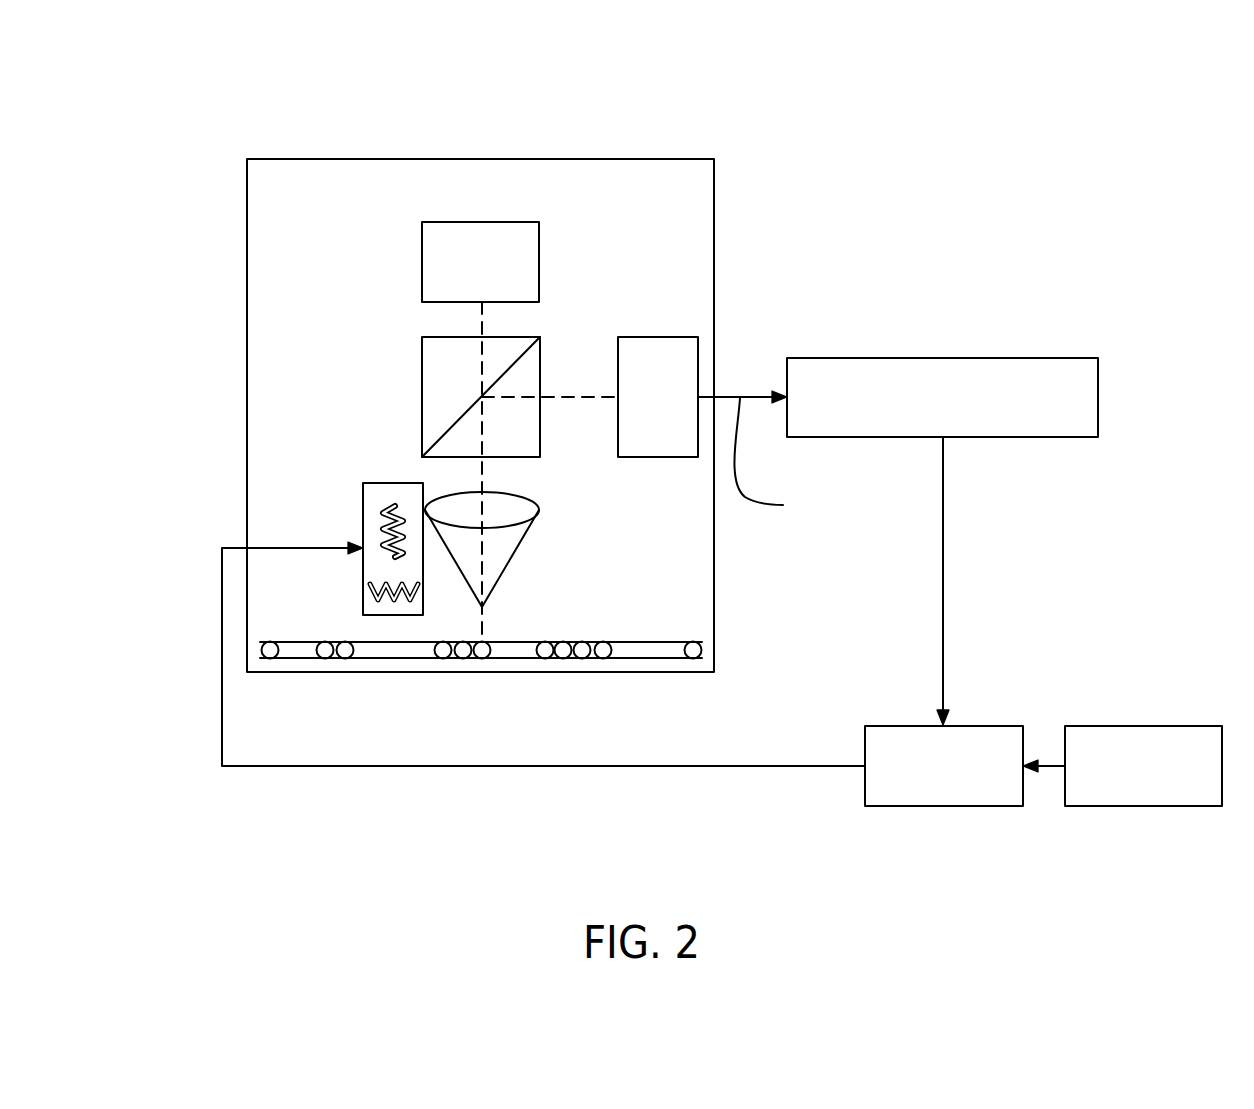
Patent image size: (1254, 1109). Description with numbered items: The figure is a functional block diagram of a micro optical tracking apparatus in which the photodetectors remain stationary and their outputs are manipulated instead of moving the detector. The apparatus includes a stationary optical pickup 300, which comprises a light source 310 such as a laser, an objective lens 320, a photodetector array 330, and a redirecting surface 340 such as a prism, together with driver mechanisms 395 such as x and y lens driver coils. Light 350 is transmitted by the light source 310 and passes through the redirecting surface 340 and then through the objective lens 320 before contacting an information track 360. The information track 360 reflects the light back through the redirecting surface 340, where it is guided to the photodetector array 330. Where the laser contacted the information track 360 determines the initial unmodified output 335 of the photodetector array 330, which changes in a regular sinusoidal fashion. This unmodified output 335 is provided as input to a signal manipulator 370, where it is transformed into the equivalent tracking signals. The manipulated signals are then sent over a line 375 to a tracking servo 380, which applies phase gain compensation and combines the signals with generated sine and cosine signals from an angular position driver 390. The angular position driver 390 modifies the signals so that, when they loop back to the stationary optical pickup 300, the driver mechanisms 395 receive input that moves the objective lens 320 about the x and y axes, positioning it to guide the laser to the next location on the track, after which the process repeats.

The stationary optical pickup 300 is at (425, 159).
The light source 310 is at (422, 263).
The objective lens 320 is at (515, 555).
The photodetector array 330 is at (658, 337).
The unmodified output 335 is at (828, 457).
The redirecting surface 340 is at (422, 395).
The light 350 is at (482, 625).
The information track 360 is at (545, 658).
The signal manipulator 370 is at (1098, 397).
The tracking signal line 375 is at (952, 570).
The tracking servo 380 is at (980, 726).
The angular position driver 390 is at (1143, 726).
The driver mechanisms 395 is at (363, 511).